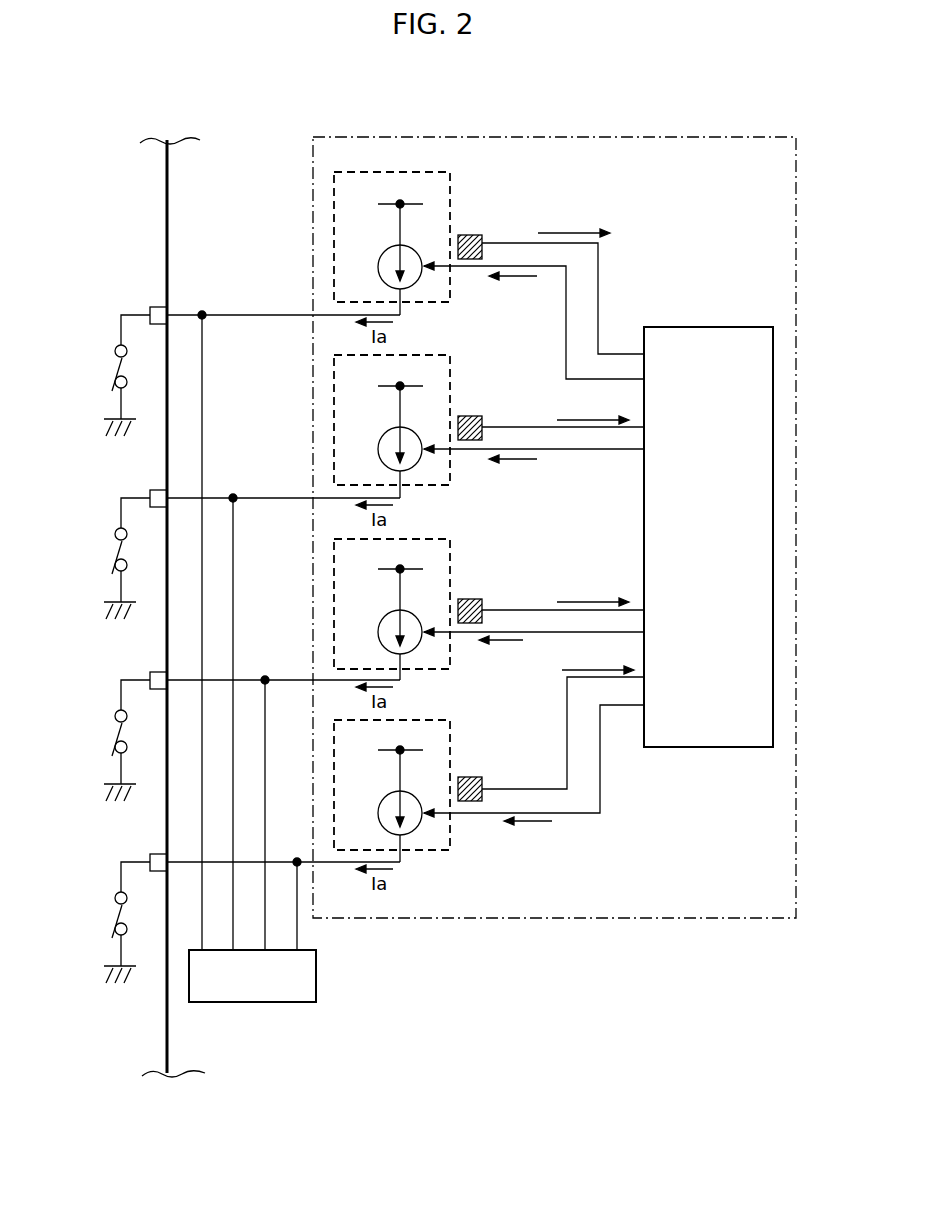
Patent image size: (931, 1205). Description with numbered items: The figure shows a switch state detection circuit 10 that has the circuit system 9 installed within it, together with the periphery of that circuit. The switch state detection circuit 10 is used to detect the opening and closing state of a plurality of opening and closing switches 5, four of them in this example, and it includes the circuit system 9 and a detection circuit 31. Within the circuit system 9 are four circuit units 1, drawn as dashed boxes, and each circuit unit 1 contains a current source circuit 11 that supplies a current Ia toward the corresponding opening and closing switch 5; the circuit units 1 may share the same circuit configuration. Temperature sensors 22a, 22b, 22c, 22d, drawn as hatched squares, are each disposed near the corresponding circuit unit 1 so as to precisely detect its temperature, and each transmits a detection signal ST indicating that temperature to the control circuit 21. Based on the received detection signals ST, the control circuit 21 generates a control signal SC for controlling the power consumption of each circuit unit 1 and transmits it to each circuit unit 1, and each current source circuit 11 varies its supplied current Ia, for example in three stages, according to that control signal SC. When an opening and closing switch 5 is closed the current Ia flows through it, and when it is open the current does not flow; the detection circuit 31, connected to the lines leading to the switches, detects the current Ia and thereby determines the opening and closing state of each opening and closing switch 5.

The switch state detection circuit 10 is at (810, 122).
The circuit system 9 is at (312, 218).
The circuit unit 1 is at (452, 188).
The current source circuit 11 is at (384, 246).
The temperature sensor 22a is at (478, 232).
The temperature sensor 22b is at (478, 415).
The temperature sensor 22c is at (478, 598).
The temperature sensor 22d is at (478, 775).
The control circuit 21 is at (712, 326).
The opening and closing switch 5 is at (110, 371).
The detection circuit 31 is at (281, 1003).